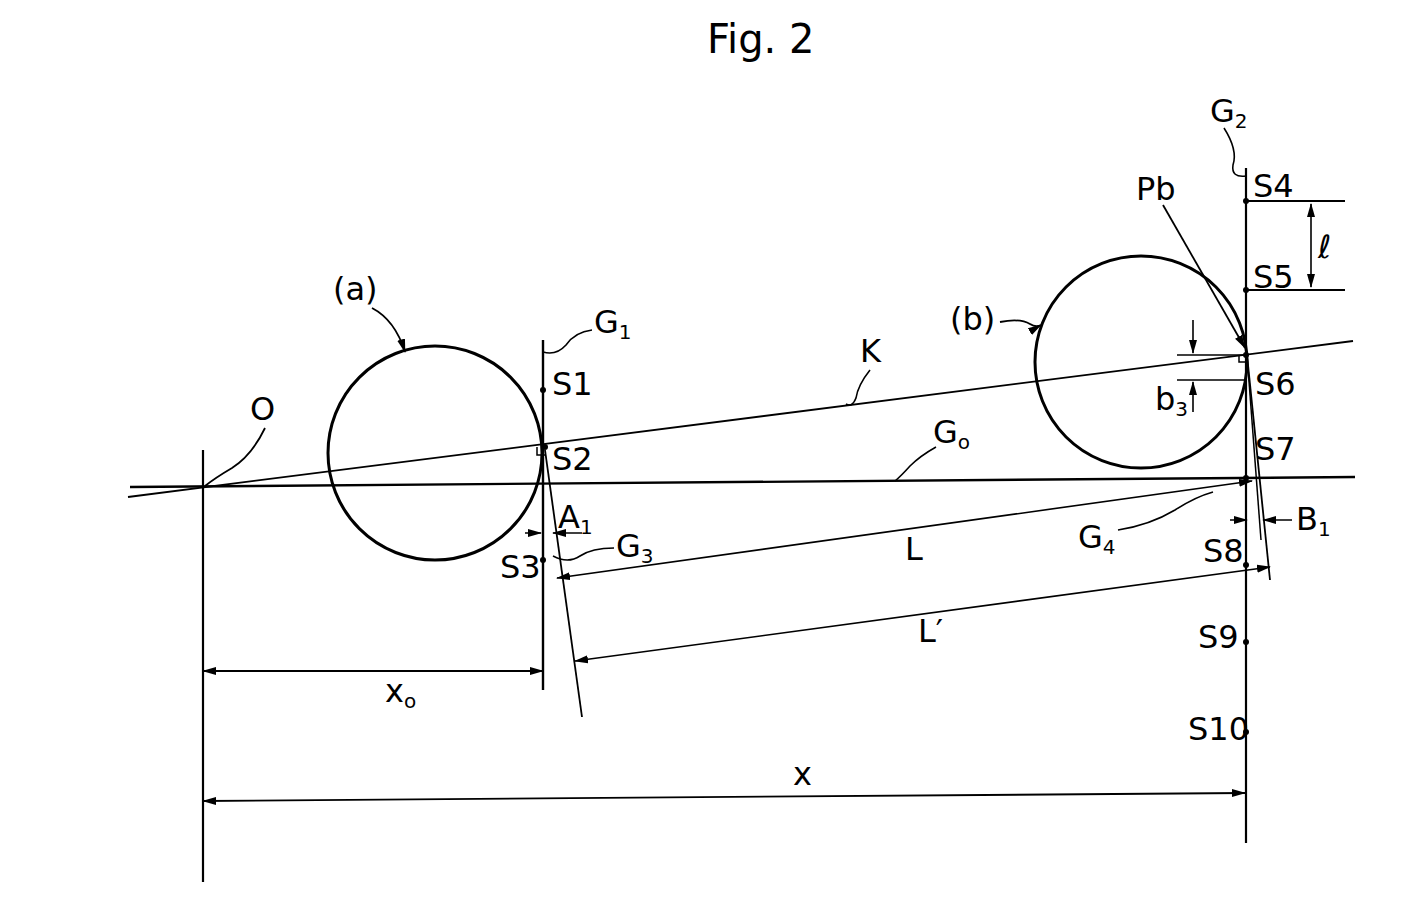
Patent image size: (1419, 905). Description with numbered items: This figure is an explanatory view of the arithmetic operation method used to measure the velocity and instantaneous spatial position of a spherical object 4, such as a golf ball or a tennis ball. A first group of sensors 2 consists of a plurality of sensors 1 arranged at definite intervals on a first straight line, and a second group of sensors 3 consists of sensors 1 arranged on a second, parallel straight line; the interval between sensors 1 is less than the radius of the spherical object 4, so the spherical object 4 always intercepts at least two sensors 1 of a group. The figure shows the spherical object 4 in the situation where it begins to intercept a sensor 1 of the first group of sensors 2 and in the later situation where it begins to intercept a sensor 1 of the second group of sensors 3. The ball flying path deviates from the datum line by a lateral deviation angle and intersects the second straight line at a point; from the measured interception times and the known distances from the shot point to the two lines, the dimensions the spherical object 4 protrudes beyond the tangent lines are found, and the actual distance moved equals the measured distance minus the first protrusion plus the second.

The sensor 1 is at (546, 390).
The first group of sensors 2 is at (533, 370).
The second group of sensors 3 is at (1259, 302).
The spherical object 4 is at (420, 566).